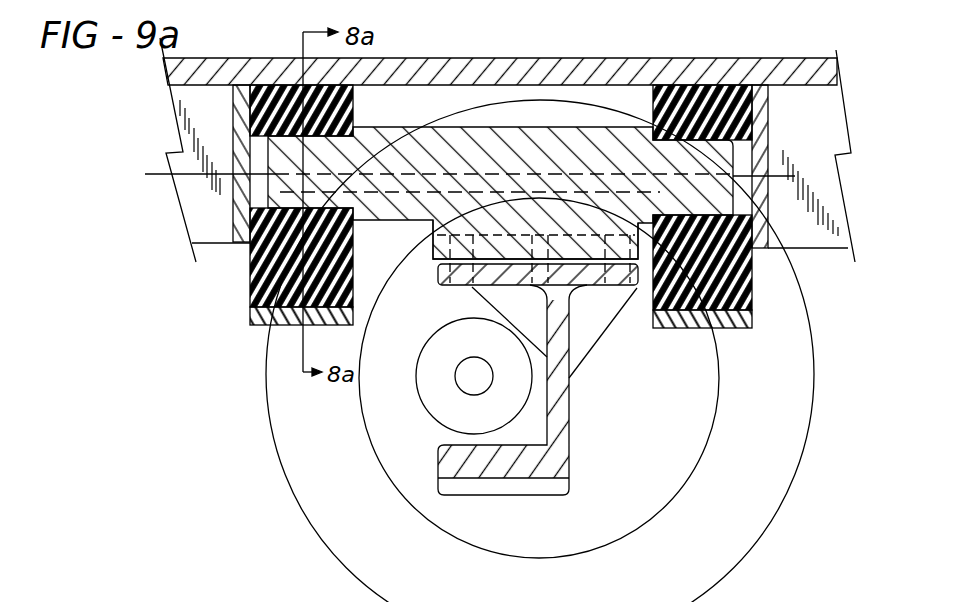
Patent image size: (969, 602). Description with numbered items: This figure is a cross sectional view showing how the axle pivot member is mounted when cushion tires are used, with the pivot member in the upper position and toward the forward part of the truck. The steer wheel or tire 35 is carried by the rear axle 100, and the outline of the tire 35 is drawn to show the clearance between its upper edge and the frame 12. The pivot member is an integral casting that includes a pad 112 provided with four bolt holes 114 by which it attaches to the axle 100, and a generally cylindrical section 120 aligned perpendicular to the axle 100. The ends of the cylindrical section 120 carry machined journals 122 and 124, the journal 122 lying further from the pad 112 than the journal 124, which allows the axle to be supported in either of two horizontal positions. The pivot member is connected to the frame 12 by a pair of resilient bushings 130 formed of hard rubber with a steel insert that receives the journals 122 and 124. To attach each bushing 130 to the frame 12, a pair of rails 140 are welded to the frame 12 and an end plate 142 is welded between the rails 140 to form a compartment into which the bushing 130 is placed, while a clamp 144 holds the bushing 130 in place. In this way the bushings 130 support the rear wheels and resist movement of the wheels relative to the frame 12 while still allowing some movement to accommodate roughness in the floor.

The frame 12 is at (252, 63).
The steer wheel 35 is at (285, 470).
The rear axle 100 is at (580, 452).
The pad 112 is at (440, 240).
The bolt holes 114 is at (447, 284).
The cylindrical section 120 is at (580, 250).
The journal 122 is at (270, 163).
The journal 124 is at (755, 147).
The resilient bushing 130 is at (247, 105).
The rails 140 is at (200, 220).
The end plate 142 is at (195, 252).
The clamp 144 is at (250, 318).